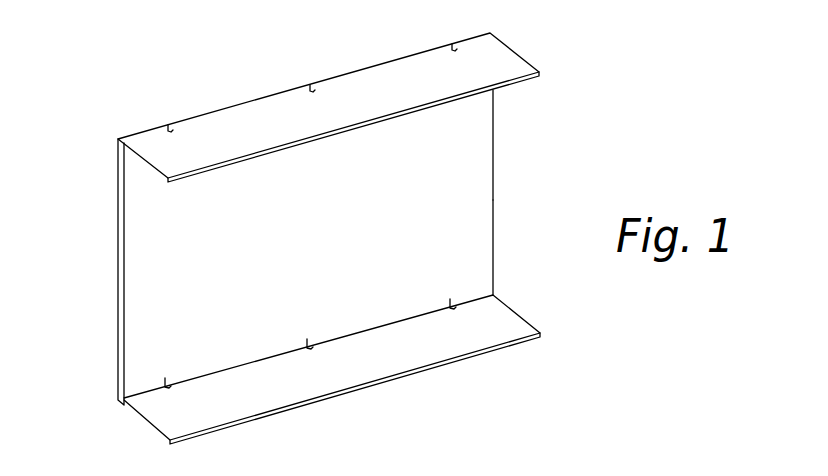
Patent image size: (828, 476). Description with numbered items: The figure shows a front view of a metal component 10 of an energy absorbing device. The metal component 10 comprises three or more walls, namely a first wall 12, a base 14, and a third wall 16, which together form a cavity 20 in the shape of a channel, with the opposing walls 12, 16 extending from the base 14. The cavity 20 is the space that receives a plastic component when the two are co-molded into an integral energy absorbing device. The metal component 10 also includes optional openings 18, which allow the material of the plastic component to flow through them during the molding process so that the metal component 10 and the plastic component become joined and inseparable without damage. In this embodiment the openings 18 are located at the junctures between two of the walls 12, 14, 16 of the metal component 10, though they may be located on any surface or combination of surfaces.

The metal component 10 is at (284, 70).
The first wall 12 is at (233, 118).
The base 14 is at (160, 240).
The third wall 16 is at (137, 407).
The opening 18 is at (172, 390).
The cavity 20 is at (432, 203).